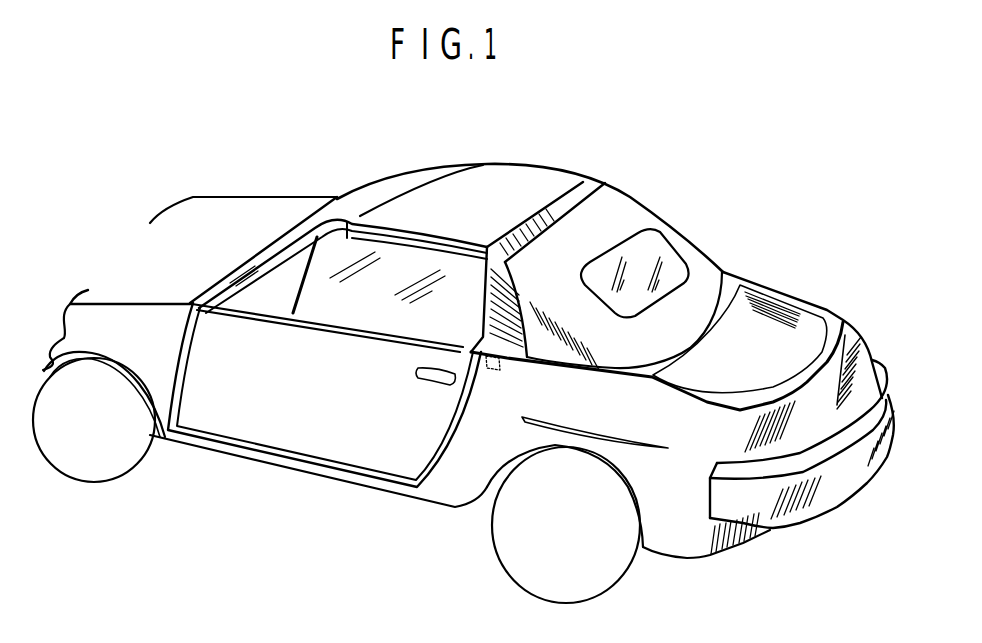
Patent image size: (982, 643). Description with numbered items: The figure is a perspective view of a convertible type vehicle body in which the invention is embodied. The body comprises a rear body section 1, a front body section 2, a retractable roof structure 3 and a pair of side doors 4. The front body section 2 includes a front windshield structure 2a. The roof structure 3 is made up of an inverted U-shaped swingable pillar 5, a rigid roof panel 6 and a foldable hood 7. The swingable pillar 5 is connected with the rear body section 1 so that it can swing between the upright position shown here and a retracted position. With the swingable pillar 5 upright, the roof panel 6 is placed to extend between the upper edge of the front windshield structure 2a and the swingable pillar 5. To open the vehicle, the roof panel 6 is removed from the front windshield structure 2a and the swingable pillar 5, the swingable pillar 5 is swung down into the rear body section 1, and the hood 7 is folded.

The rear body section 1 is at (800, 286).
The front body section 2 is at (257, 187).
The front windshield structure 2a is at (322, 203).
The retractable roof structure 3 is at (649, 155).
The side doors 4 is at (302, 445).
The swingable pillar 5 is at (513, 338).
The rigid roof panel 6 is at (557, 177).
The foldable hood 7 is at (641, 213).